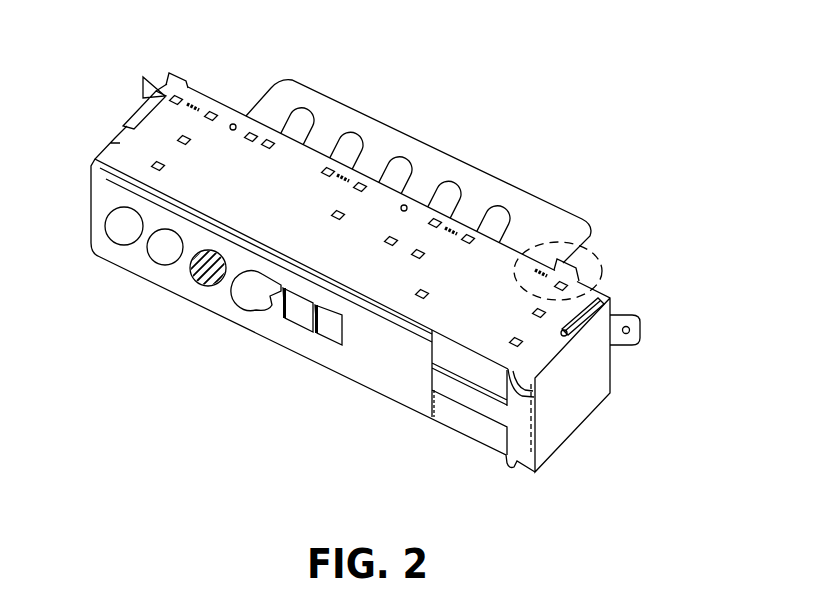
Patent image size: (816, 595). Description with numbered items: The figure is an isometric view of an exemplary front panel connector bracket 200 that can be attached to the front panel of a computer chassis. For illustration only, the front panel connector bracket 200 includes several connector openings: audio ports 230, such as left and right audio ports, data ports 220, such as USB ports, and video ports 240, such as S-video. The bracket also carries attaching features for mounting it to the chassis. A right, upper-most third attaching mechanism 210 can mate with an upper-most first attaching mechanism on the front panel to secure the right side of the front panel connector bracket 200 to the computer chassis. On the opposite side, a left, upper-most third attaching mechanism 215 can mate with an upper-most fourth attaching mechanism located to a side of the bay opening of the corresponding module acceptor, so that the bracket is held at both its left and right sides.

The front panel connector bracket 200 is at (538, 144).
The third attaching mechanism 210 is at (597, 262).
The third attaching mechanism 215 is at (179, 77).
The data ports 220 is at (450, 348).
The audio ports 230 is at (196, 278).
The video ports 240 is at (275, 307).